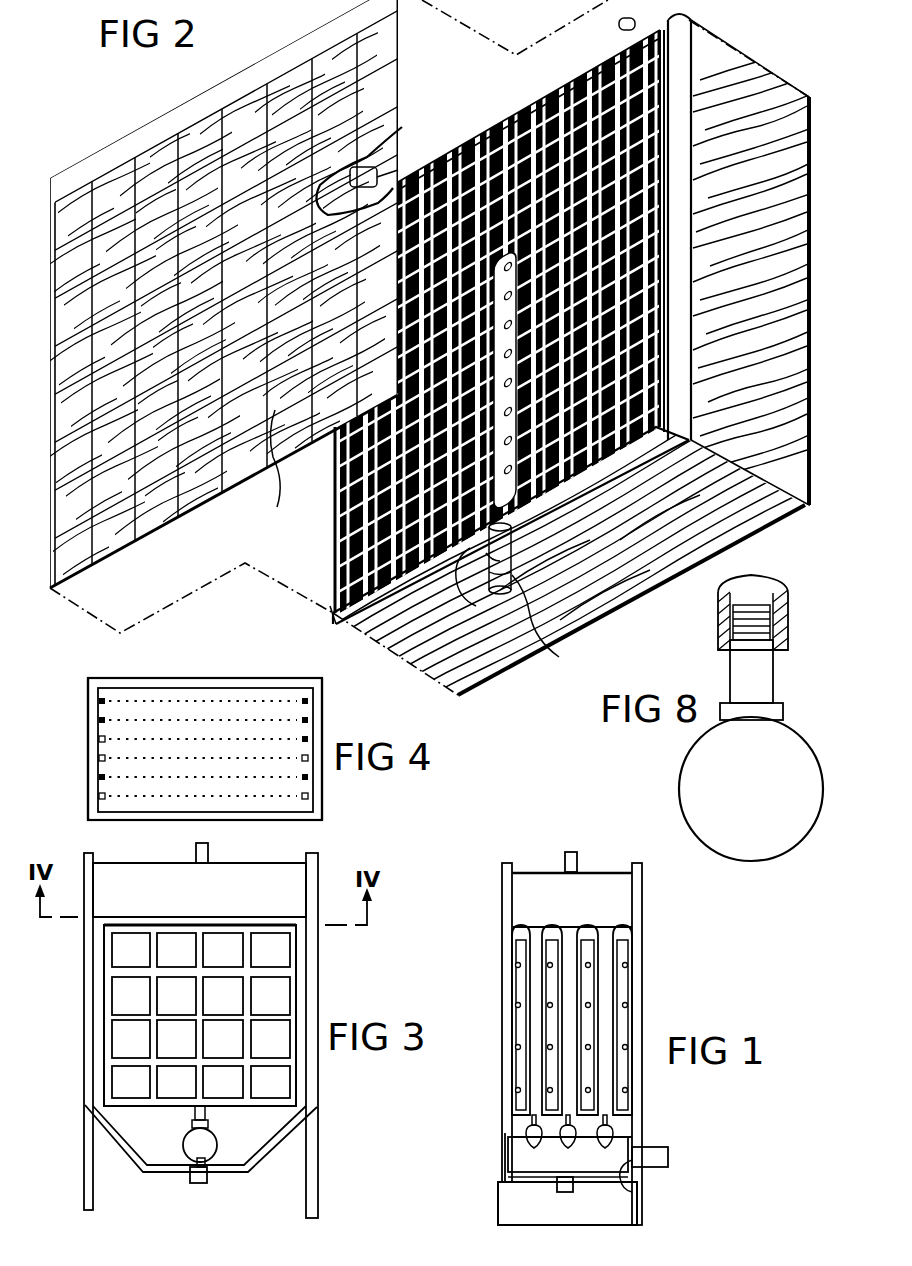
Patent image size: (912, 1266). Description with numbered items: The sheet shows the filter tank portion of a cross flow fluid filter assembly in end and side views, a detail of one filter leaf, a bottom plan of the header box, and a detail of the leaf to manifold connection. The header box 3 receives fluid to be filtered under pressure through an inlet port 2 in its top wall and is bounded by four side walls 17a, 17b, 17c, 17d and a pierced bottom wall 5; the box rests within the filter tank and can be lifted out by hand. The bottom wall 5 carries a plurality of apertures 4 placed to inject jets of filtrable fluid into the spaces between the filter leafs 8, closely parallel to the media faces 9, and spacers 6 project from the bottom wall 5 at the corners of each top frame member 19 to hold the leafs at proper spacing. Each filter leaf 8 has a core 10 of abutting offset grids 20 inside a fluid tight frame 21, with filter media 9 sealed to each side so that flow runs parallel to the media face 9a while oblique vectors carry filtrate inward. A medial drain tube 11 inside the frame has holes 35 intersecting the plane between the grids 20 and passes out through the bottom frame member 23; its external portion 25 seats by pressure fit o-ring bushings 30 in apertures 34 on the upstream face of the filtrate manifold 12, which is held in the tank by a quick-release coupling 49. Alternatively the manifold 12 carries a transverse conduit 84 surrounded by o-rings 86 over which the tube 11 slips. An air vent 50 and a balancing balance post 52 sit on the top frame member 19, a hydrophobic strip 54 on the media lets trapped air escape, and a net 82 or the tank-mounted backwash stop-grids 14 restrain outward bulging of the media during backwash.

In FIG. 3, the inlet port 2 is at (205, 853).
In FIG. 1, the inlet port 2 is at (577, 862).
In FIG. 4, the header box 3 is at (336, 705).
In FIG. 3, the header box 3 is at (333, 871).
In FIG. 1, the header box 3 is at (502, 852).
In FIG. 4, the apertures 4 is at (157, 720).
In FIG. 4, the bottom wall 5 is at (310, 693).
In FIG. 4, the spacers 6 is at (100, 777).
In FIG. 2, the filter leafs 8 is at (817, 399).
In FIG. 1, the filter leafs 8 is at (531, 929).
In FIG. 2, the filter media 9 is at (134, 513).
In FIG. 2, the face of the filter media 9a is at (756, 536).
In FIG. 2, the core 10 is at (665, 330).
In FIG. 2, the medial drain tube 11 is at (520, 565).
In FIG. 1, the medial drain tube 11 is at (529, 1124).
In FIG. 8, the medial drain tube 11 is at (775, 588).
In FIG. 3, the filtrate manifold 12 is at (193, 1148).
In FIG. 1, the filtrate manifold 12 is at (619, 1152).
In FIG. 8, the filtrate manifold 12 is at (683, 752).
In FIG. 3, the backwash stop-grids 14 is at (300, 1027).
In FIG. 1, the backwash stop-grids 14 is at (628, 981).
In FIG. 4, the side wall 17a is at (200, 678).
In FIG. 4, the side wall 17b is at (322, 730).
In FIG. 4, the side wall 17c is at (103, 820).
In FIG. 4, the side wall 17d is at (88, 697).
In FIG. 2, the top frame member 19 is at (446, 135).
In FIG. 2, the abutting offset grids 20 is at (536, 100).
In FIG. 2, the frame 21 is at (680, 103).
In FIG. 2, the bottom frame member 23 is at (333, 613).
In FIG. 2, the external portion 25 is at (487, 556).
In FIG. 2, the o-ring bushings 30 is at (523, 612).
In FIG. 3, the apertures 34 is at (207, 1123).
In FIG. 1, the apertures 34 is at (531, 1146).
In FIG. 2, the holes 35 is at (497, 510).
In FIG. 1, the quick-release fluid-tight coupling 49 is at (632, 1197).
In FIG. 2, the air vent 50 is at (620, 22).
In FIG. 2, the balance post 52 is at (405, 135).
In FIG. 2, the hydrophobic strip 54 is at (147, 133).
In FIG. 2, the net 82 is at (278, 473).
In FIG. 8, the transverse conduit 84 is at (730, 667).
In FIG. 8, the o-rings 86 is at (781, 627).